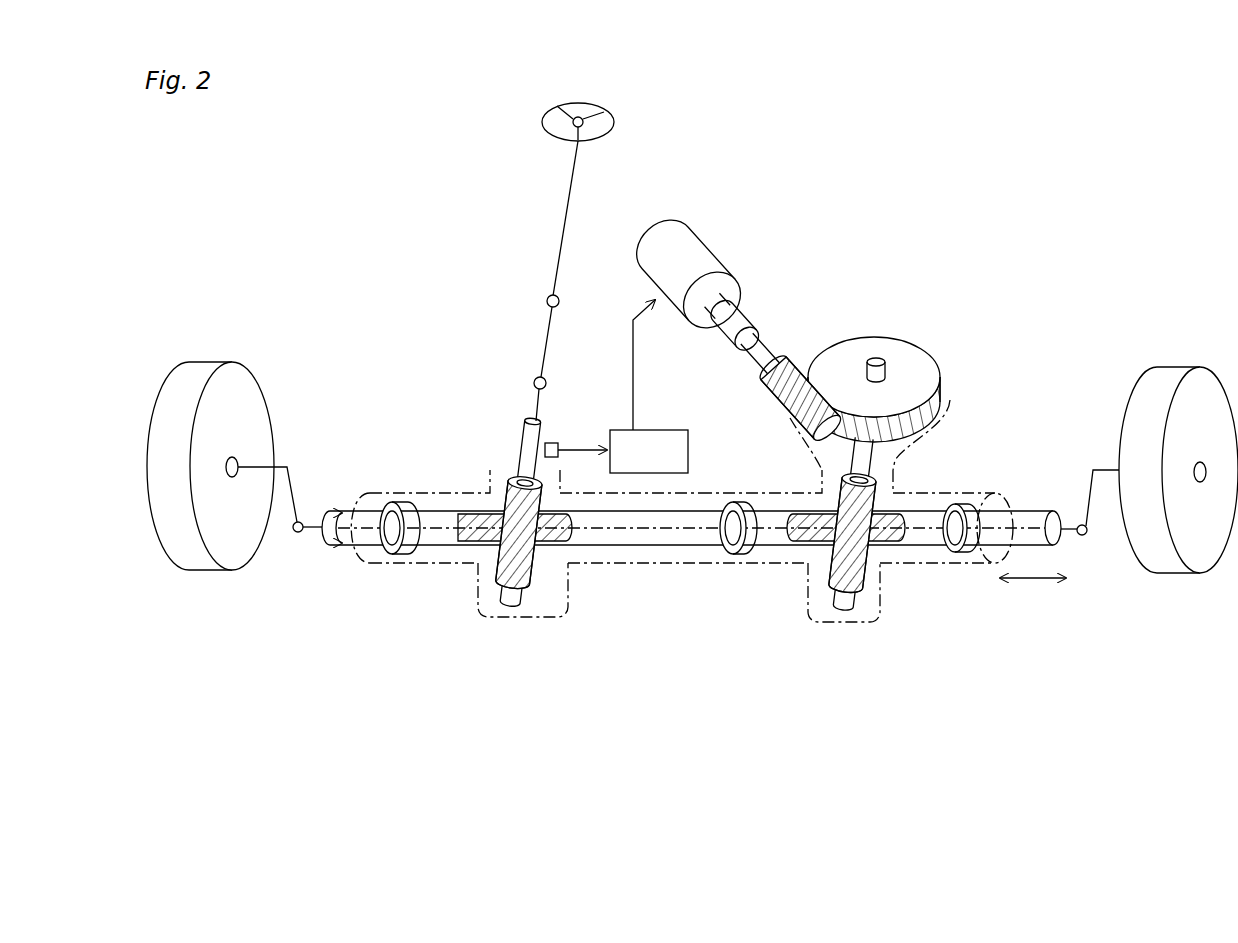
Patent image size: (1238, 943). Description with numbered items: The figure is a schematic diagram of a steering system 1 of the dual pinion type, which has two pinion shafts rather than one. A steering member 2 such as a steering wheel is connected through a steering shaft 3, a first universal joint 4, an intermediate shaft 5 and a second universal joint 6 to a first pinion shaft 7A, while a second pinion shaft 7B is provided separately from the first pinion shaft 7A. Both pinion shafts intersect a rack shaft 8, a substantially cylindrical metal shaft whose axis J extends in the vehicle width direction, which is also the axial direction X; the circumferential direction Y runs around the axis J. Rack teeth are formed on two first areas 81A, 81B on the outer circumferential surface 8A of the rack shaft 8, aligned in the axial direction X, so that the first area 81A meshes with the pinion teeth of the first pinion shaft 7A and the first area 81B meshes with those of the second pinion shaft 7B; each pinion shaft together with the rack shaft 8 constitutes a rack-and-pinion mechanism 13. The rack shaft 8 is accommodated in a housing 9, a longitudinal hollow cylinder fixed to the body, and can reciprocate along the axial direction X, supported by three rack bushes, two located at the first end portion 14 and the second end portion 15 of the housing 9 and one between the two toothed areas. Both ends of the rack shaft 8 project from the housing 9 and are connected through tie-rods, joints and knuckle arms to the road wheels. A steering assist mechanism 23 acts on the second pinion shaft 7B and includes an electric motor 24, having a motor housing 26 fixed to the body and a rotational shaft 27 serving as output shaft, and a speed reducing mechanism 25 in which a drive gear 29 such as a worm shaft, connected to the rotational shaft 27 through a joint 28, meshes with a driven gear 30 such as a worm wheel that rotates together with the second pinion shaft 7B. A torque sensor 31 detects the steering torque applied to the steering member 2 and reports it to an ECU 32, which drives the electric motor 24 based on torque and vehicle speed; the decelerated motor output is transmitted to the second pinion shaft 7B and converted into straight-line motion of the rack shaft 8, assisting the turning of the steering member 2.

The steering system 1 is at (652, 145).
The steering member 2 is at (582, 102).
The steering shaft 3 is at (563, 199).
The first universal joint 4 is at (546, 301).
The intermediate shaft 5 is at (545, 340).
The second universal joint 6 is at (547, 380).
The first pinion shaft 7A is at (523, 440).
The second pinion shaft 7B is at (849, 606).
The rack shaft 8 is at (670, 547).
The outer circumferential surface 8A is at (712, 547).
The housing 9 is at (560, 568).
The rack-and-pinion mechanism 13 is at (638, 567).
The first end portion 14 is at (380, 566).
The second end portion 15 is at (990, 566).
The steering assist mechanism 23 is at (788, 223).
The electric motor 24 is at (703, 232).
The speed reducing mechanism 25 is at (903, 290).
The motor housing 26 is at (656, 262).
The rotational shaft 27 is at (712, 316).
The joint 28 is at (746, 318).
The drive gear 29 is at (788, 365).
The driven gear 30 is at (866, 352).
The torque sensor 31 is at (553, 442).
The ECU 32 is at (666, 430).
The first area 81A is at (478, 538).
The first area 81B is at (815, 538).
The axis J is at (601, 547).
The axial direction X is at (1033, 580).
The circumferential direction Y is at (341, 510).